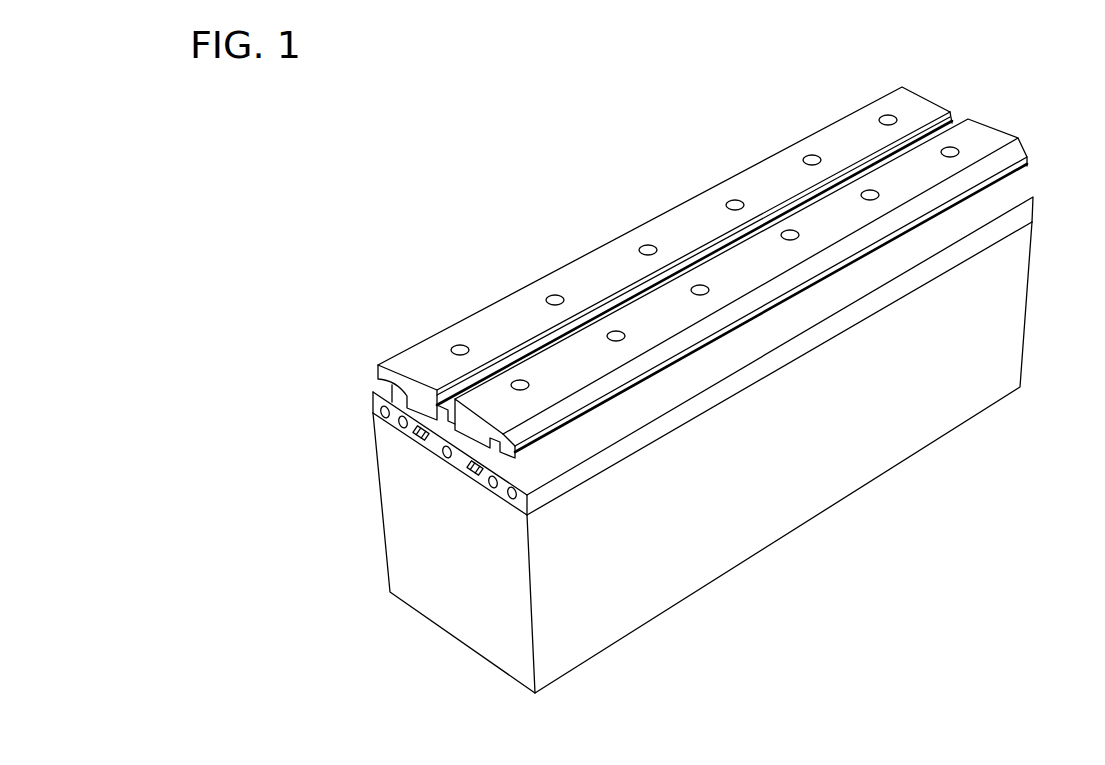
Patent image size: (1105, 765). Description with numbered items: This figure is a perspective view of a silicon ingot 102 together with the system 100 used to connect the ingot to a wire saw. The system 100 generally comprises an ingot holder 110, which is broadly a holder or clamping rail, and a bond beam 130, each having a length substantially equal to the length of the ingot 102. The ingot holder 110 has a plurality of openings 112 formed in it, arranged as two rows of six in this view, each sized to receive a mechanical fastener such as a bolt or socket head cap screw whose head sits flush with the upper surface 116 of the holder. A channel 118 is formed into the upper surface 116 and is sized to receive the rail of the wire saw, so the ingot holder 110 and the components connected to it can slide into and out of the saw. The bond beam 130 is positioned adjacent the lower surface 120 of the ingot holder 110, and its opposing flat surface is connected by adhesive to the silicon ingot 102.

The system 100 is at (999, 98).
The silicon ingot 102 is at (597, 630).
The ingot holder 110 is at (408, 334).
The openings 112 is at (647, 245).
The upper surface 116 is at (589, 261).
The channel 118 is at (443, 418).
The lower surface 120 is at (404, 384).
The bond beam 130 is at (366, 403).